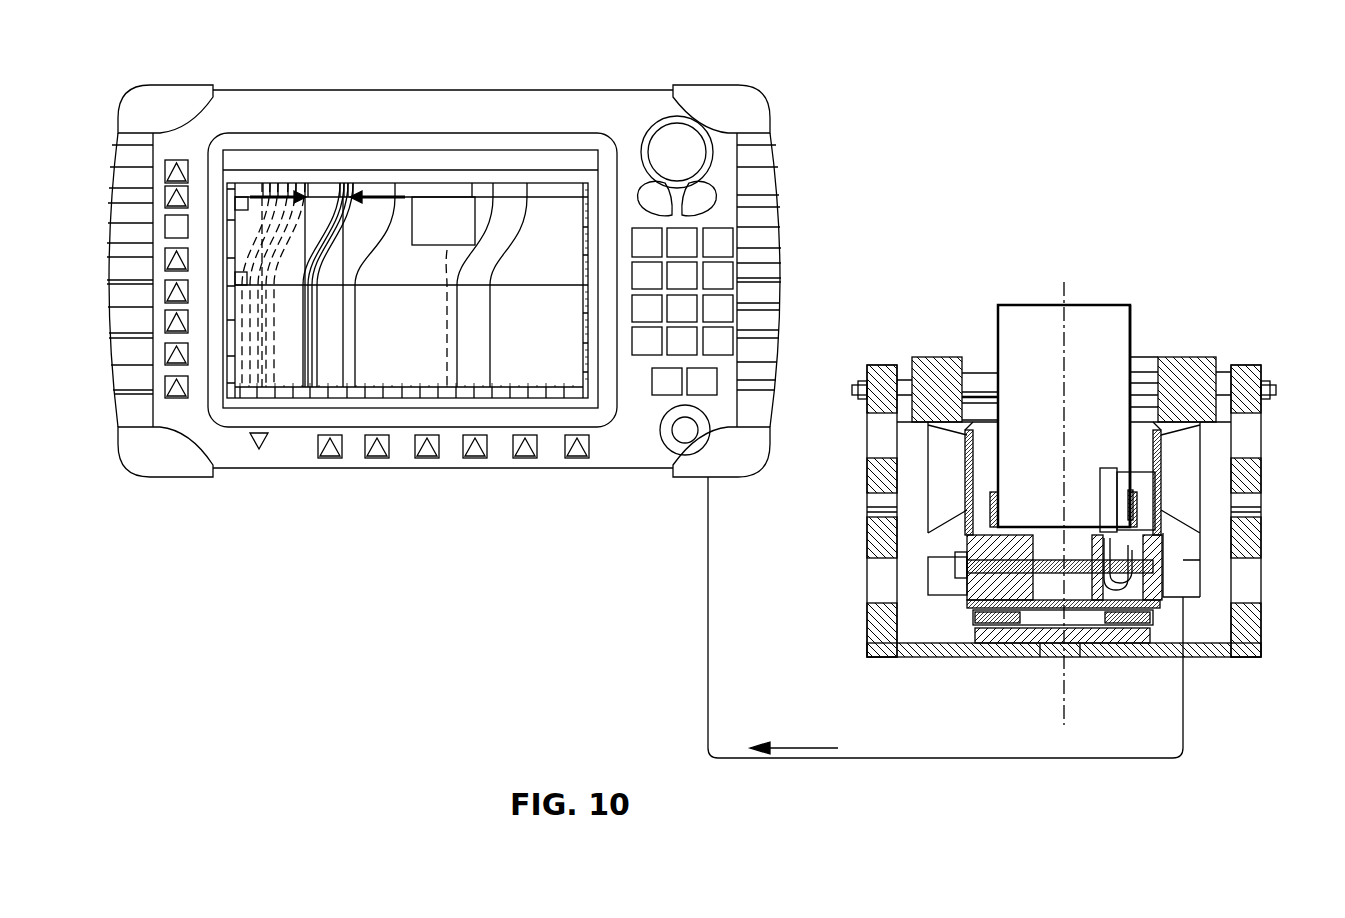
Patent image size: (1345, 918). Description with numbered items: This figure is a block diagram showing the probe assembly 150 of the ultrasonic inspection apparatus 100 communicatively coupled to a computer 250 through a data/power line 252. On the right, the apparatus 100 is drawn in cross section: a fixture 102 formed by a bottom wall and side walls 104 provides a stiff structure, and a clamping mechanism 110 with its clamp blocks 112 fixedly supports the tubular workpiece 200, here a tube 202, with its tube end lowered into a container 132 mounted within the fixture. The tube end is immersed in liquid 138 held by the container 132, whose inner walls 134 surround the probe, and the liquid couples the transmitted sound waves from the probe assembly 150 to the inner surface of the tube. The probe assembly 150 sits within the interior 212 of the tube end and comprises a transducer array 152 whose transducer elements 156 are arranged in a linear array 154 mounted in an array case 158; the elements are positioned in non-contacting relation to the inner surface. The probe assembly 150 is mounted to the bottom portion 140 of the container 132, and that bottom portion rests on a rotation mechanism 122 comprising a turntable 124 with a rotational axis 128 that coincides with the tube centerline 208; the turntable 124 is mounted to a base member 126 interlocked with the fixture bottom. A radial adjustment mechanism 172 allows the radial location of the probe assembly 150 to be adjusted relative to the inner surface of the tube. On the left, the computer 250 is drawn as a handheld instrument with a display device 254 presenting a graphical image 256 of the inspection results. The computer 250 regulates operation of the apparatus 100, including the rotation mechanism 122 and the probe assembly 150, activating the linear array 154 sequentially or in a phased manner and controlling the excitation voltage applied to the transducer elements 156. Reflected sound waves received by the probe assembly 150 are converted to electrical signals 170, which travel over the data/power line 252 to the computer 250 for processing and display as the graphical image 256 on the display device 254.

The apparatus 100 is at (865, 373).
The fixture 102 is at (880, 415).
The side walls 104 is at (1250, 465).
The clamping mechanism 110 is at (1195, 357).
The clamp block 112 is at (930, 357).
The rotation mechanism 122 is at (965, 603).
The turntable 124 is at (982, 640).
The base member 126 is at (1010, 640).
The rotational axis 128 is at (1066, 700).
The container 132 is at (965, 458).
The inner wall 134 is at (965, 490).
The liquid 138 is at (1150, 433).
The bottom portion 140 is at (950, 625).
The probe assembly 150 is at (1165, 580).
The transducer array 152 is at (1132, 488).
The linear array 154 is at (1135, 512).
The transducer elements 156 is at (1125, 553).
The array case 158 is at (1135, 575).
The electrical signals 170 is at (797, 748).
The radial adjustment mechanism 172 is at (965, 567).
The tubular workpiece 200 is at (1003, 305).
The tube 202 is at (1130, 305).
The pipe axis 208 is at (1062, 290).
The interior 212 is at (1077, 324).
The computer 250 is at (490, 90).
The data/power line 252 is at (1183, 712).
The display device 254 is at (274, 160).
The graphical image 256 is at (387, 150).